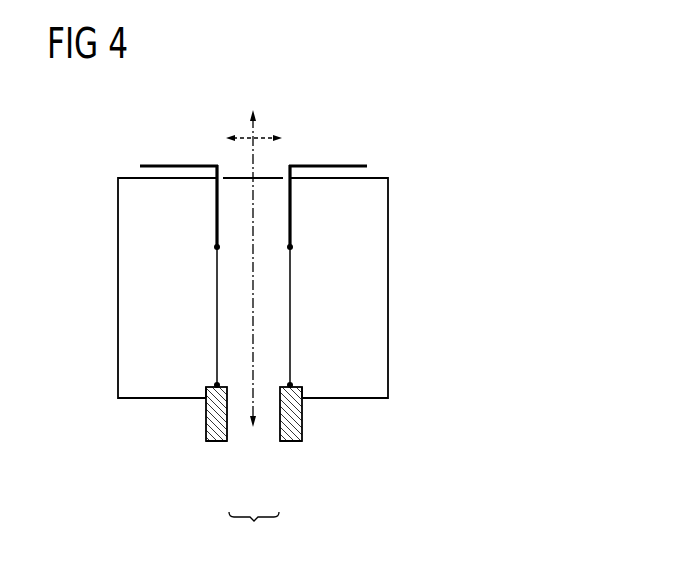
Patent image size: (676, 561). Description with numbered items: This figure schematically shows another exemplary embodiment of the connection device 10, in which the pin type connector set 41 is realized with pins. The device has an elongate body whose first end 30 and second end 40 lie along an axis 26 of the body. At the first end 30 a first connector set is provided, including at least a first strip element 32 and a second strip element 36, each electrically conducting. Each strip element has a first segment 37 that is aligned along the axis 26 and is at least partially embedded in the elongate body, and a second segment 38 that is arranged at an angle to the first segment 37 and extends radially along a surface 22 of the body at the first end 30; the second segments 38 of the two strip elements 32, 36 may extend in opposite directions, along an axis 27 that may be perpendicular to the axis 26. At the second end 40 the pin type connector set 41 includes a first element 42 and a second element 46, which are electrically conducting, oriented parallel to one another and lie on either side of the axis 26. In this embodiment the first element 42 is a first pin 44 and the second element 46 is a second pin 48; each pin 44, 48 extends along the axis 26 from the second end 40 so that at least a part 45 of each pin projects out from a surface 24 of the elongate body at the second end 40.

The connection device 10 is at (486, 266).
The surface of the elongate body at the first end 22 is at (133, 178).
The surface of the elongate body at the second end 24 is at (138, 399).
The axis 26 is at (253, 106).
The axis 27 is at (250, 138).
The first end 30 is at (413, 150).
The first strip element 32 is at (189, 156).
The second strip element 36 is at (344, 154).
The first segment 37 is at (217, 205).
The second segment 38 is at (148, 165).
The second end 40 is at (365, 409).
The pin type connector set 41 is at (254, 532).
The first element 42 is at (222, 453).
The first pin 44 is at (206, 388).
The part of the pin 45 is at (207, 437).
The second element 46 is at (288, 453).
The second pin 48 is at (302, 388).